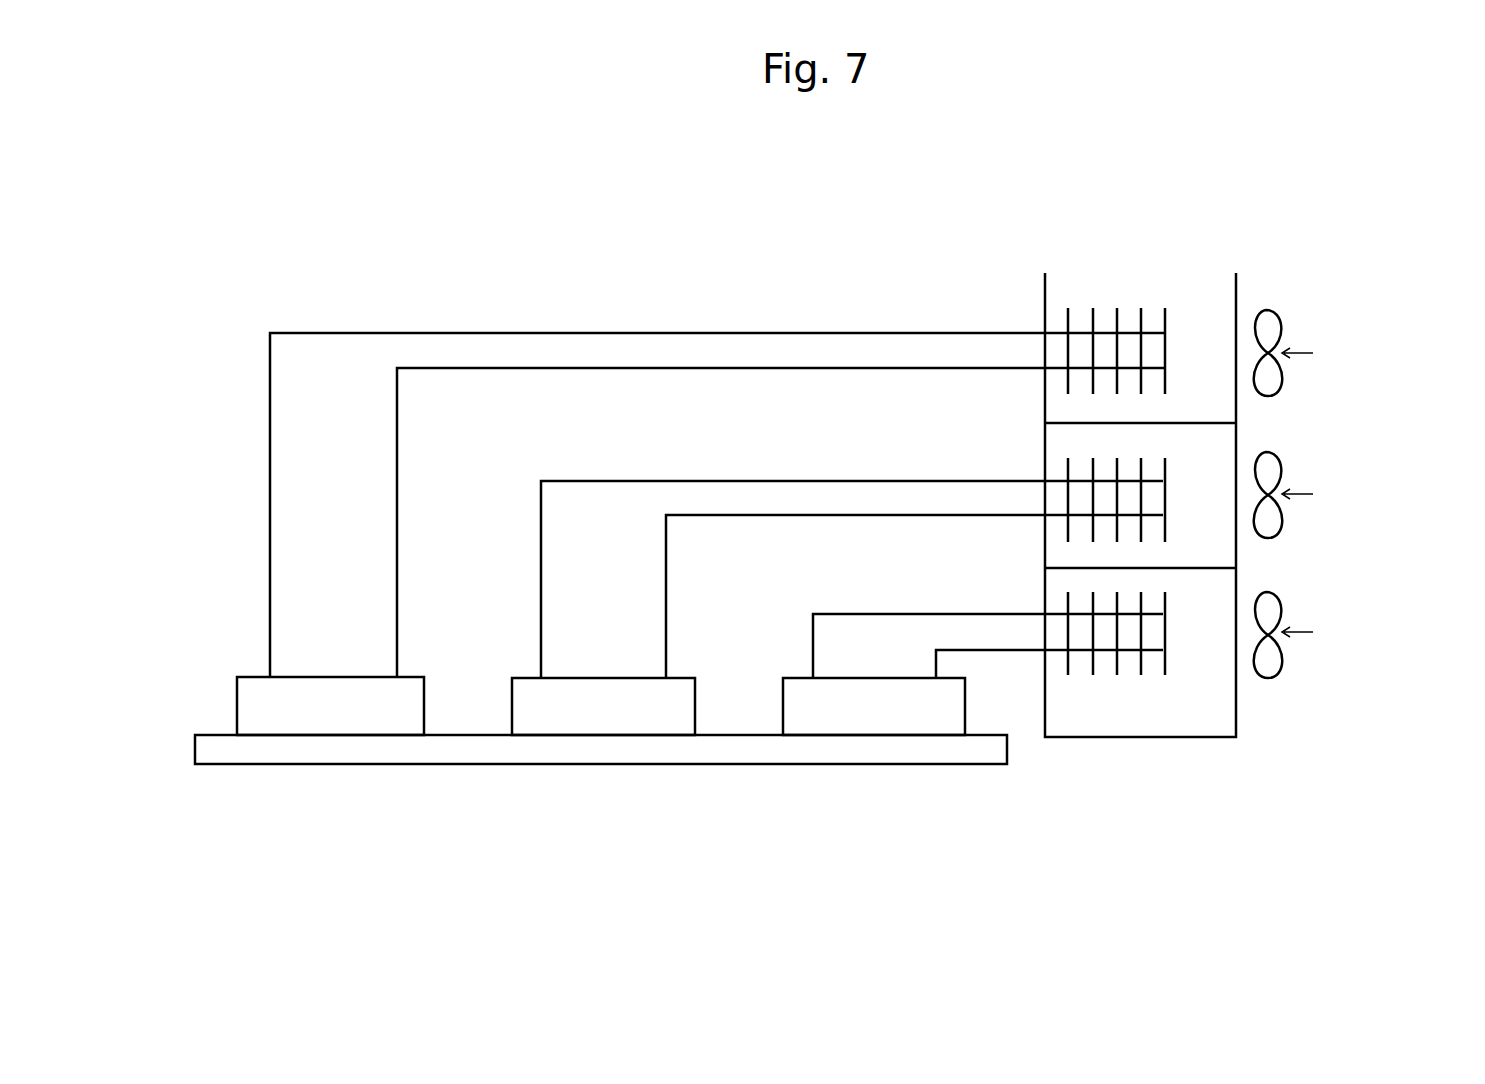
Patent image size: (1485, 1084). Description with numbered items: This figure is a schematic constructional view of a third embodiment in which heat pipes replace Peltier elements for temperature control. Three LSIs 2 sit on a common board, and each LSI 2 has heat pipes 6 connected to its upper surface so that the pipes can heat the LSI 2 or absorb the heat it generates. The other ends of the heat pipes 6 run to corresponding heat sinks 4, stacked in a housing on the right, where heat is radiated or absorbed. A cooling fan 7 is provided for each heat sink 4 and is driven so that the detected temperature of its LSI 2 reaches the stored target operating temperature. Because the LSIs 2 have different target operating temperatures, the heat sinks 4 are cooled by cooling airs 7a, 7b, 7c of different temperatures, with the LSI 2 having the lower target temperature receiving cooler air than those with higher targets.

The LSI 2 is at (237, 700).
The heat sink 4 is at (1127, 307).
The heat pipe 6 is at (398, 540).
The cooling fan 7 is at (1337, 468).
The cooling air 7a is at (1327, 373).
The cooling air 7b is at (1328, 515).
The cooling air 7c is at (1330, 650).